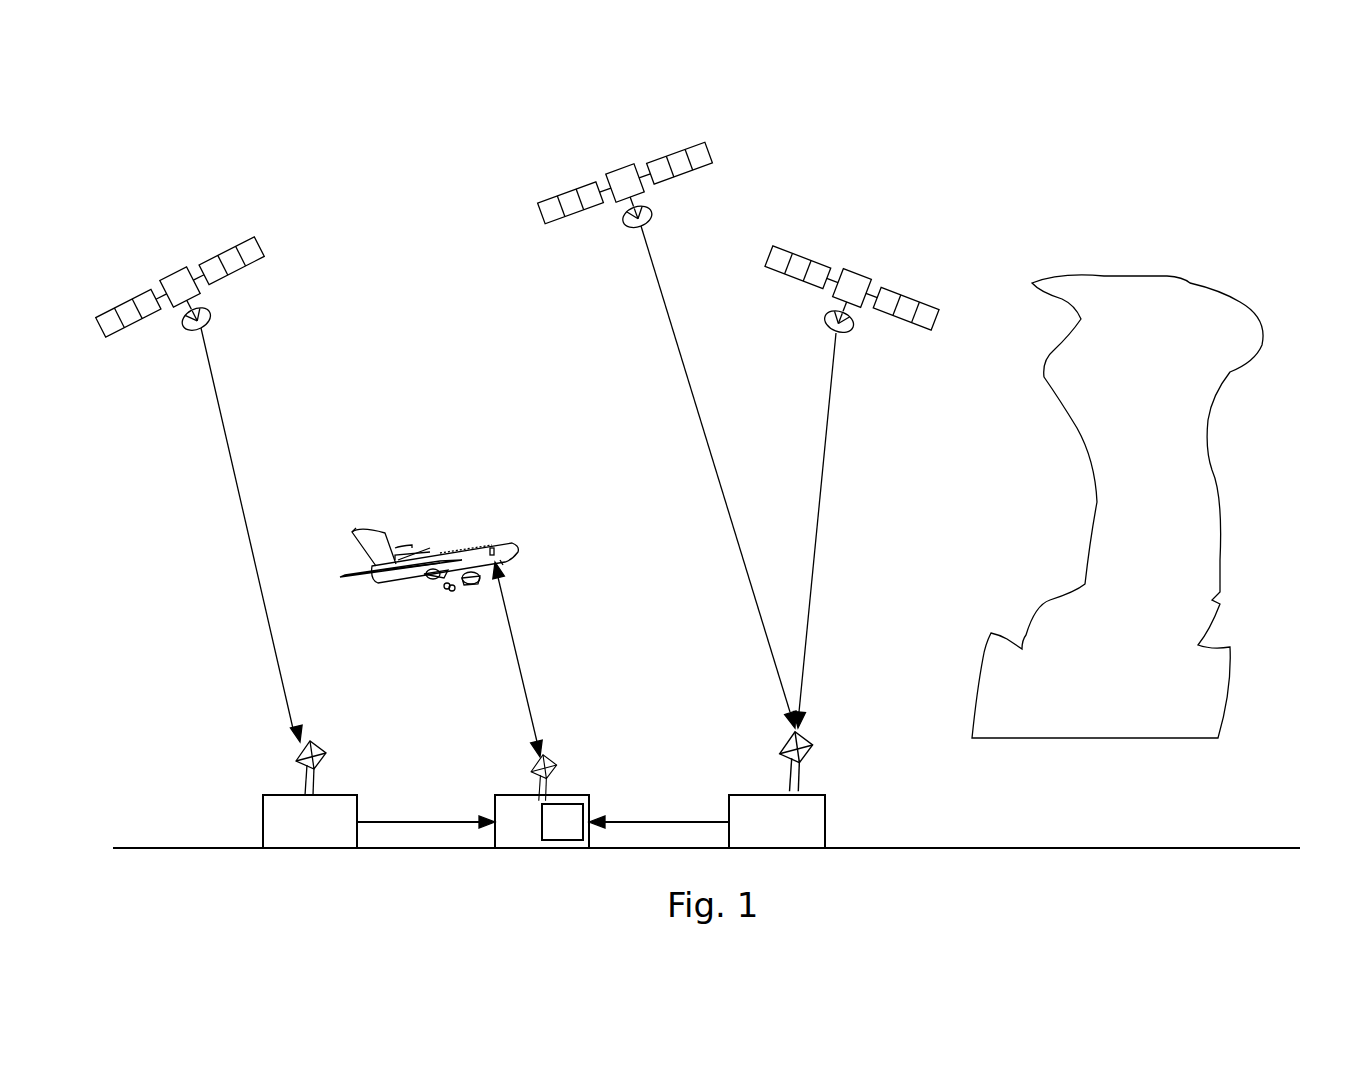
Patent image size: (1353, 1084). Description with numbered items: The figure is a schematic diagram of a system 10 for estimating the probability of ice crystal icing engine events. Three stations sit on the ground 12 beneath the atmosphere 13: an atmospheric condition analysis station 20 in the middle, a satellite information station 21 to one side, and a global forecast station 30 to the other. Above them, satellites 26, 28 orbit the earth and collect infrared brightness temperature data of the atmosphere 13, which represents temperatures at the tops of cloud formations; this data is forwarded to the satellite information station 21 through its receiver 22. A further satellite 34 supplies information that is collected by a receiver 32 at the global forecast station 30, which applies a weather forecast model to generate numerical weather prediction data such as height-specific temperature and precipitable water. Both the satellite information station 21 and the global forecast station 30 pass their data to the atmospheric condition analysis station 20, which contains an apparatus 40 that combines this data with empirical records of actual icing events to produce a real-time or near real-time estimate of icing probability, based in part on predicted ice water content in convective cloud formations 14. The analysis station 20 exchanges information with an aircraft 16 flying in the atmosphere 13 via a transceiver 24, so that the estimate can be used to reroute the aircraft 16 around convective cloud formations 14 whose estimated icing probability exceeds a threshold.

The system 10 is at (1003, 190).
The ground 12 is at (1233, 848).
The atmosphere 13 is at (608, 429).
The convective cloud formations 14 is at (1168, 520).
The aircraft 16 is at (475, 535).
The atmospheric condition analysis station 20 is at (530, 834).
The satellite information station 21 is at (790, 834).
The receiver 22 is at (805, 757).
The transceiver 24 is at (535, 770).
The satellite 26 is at (851, 262).
The satellite 28 is at (628, 158).
The global forecast station 30 is at (322, 834).
The receiver 32 is at (317, 745).
The satellite 34 is at (183, 262).
The apparatus 40 is at (574, 834).